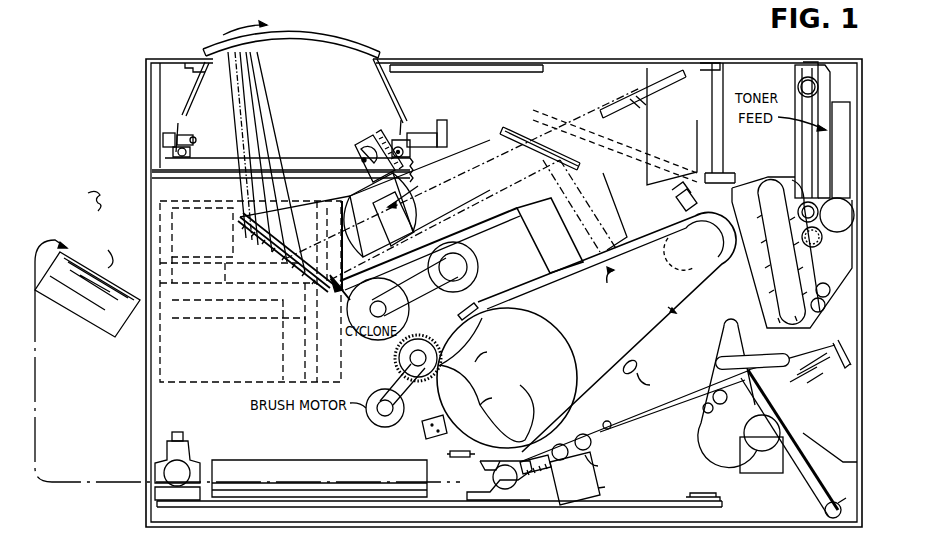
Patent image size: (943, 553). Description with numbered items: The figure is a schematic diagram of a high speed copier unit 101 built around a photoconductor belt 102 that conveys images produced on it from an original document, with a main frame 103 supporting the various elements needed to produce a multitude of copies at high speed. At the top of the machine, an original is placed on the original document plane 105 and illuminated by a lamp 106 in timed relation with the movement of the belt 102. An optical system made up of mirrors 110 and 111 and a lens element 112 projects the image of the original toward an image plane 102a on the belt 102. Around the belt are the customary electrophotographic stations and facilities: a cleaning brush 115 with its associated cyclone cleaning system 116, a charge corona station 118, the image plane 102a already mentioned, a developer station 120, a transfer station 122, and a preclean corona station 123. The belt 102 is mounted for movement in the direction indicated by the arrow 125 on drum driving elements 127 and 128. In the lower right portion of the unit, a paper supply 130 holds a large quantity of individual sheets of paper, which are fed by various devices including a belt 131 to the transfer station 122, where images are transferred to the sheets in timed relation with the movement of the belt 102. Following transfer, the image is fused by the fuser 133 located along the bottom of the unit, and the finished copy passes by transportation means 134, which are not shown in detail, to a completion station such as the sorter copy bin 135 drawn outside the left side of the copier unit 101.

The high speed copier unit 101 is at (872, 100).
The photoconductor belt 102 is at (670, 334).
The image plane 102a is at (598, 250).
The main frame 103 is at (156, 118).
The original document plane 105 is at (358, 44).
The lamp 106 is at (366, 148).
The mirror 110 is at (300, 258).
The mirror 111 is at (508, 128).
The lens element 112 is at (415, 230).
The cleaning brush 115 is at (418, 338).
The cyclone cleaning system 116 is at (378, 285).
The charge corona station 118 is at (458, 316).
The developer station 120 is at (740, 294).
The transfer station 122 is at (478, 458).
The preclean corona station 123 is at (418, 428).
The arrow 125 is at (624, 279).
The drum driving element 127 is at (542, 325).
The drum driving element 128 is at (677, 255).
The paper supply 130 is at (842, 328).
The belt 131 is at (639, 430).
The fuser 133 is at (290, 446).
The transportation means 134 is at (52, 480).
The sorter copy bin 135 is at (105, 332).